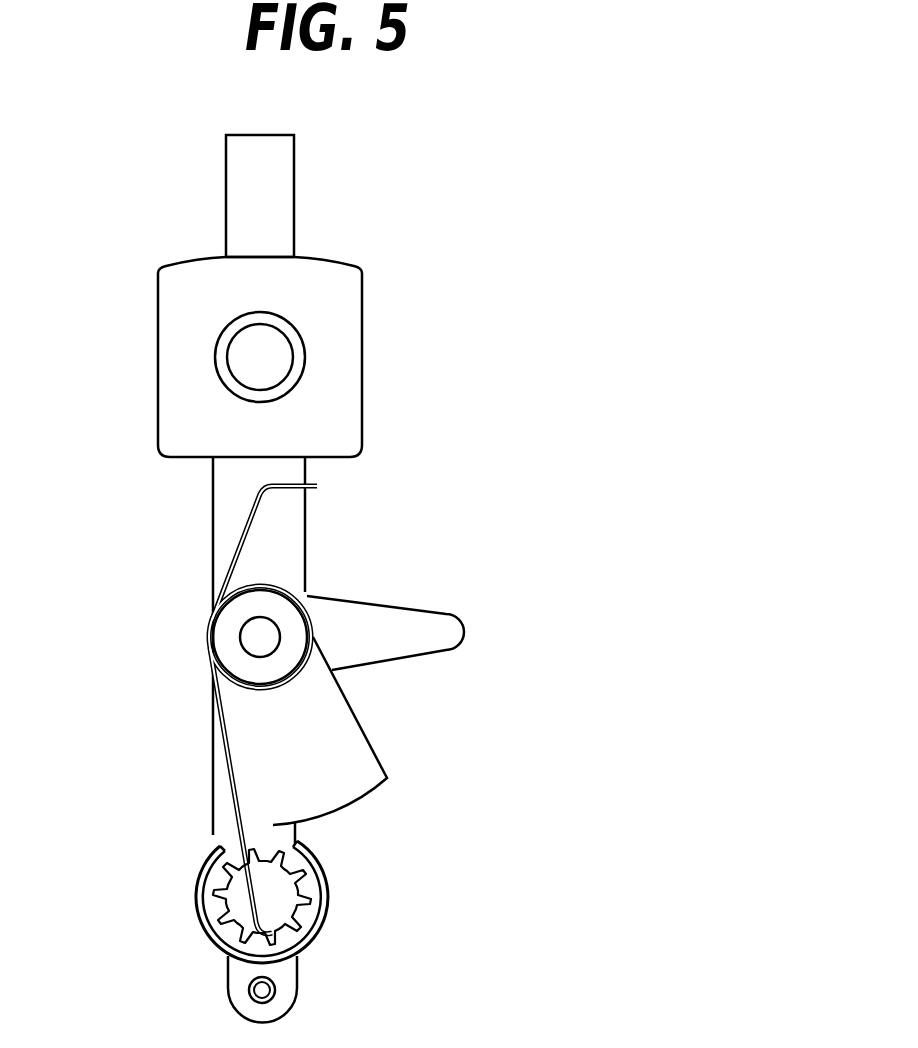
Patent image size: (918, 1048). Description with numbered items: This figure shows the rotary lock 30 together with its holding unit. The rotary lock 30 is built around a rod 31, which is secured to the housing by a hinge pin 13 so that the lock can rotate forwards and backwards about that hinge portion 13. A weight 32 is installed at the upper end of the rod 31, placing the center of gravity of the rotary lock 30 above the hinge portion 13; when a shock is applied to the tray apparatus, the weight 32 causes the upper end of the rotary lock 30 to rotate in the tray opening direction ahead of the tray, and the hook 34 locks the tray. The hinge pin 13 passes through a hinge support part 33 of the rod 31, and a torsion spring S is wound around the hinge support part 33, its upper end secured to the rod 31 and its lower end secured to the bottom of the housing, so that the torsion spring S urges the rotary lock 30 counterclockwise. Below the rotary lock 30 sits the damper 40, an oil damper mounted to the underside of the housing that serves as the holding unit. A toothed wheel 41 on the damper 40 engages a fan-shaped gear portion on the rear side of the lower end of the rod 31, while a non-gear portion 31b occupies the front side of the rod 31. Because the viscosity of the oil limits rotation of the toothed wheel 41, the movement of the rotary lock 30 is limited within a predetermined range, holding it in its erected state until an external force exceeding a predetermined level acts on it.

The rotary lock 30 is at (396, 526).
The rod 31 is at (242, 195).
The non-gear portion 31b is at (380, 783).
The weight 32 is at (340, 322).
The hinge support part 33 is at (232, 652).
The hinge pin 13 is at (258, 631).
The hook 34 is at (443, 627).
The torsion spring S is at (237, 777).
The damper 40 is at (357, 903).
The toothed wheel 41 is at (237, 888).